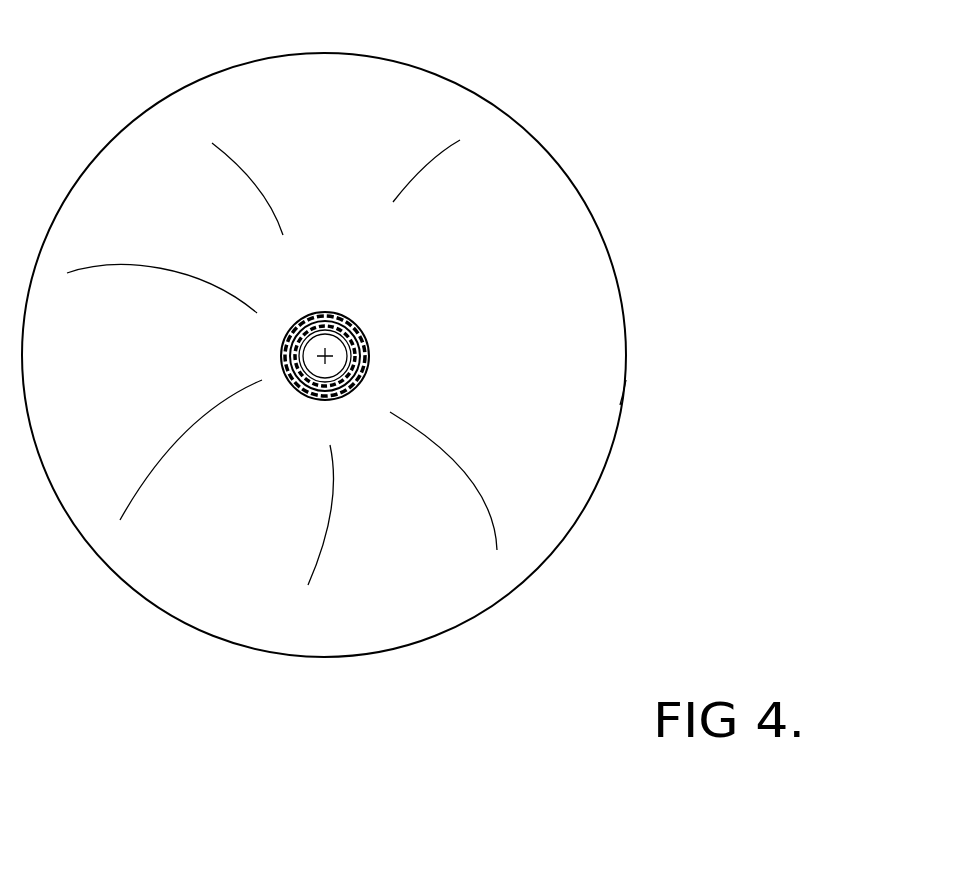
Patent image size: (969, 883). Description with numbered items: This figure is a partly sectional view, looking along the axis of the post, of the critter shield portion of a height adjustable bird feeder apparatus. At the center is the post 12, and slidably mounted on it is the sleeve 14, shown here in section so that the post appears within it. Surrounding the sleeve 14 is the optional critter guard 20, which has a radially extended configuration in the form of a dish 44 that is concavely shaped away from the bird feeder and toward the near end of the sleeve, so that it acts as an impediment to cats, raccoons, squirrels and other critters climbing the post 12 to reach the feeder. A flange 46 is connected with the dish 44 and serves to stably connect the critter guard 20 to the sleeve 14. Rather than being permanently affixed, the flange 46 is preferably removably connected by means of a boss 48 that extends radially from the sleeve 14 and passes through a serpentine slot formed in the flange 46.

The critter shield 20 is at (620, 174).
The dish 44 is at (625, 400).
The boss 48 is at (320, 407).
The post 12 is at (340, 312).
The flange 46 is at (368, 351).
The sleeve 14 is at (375, 382).